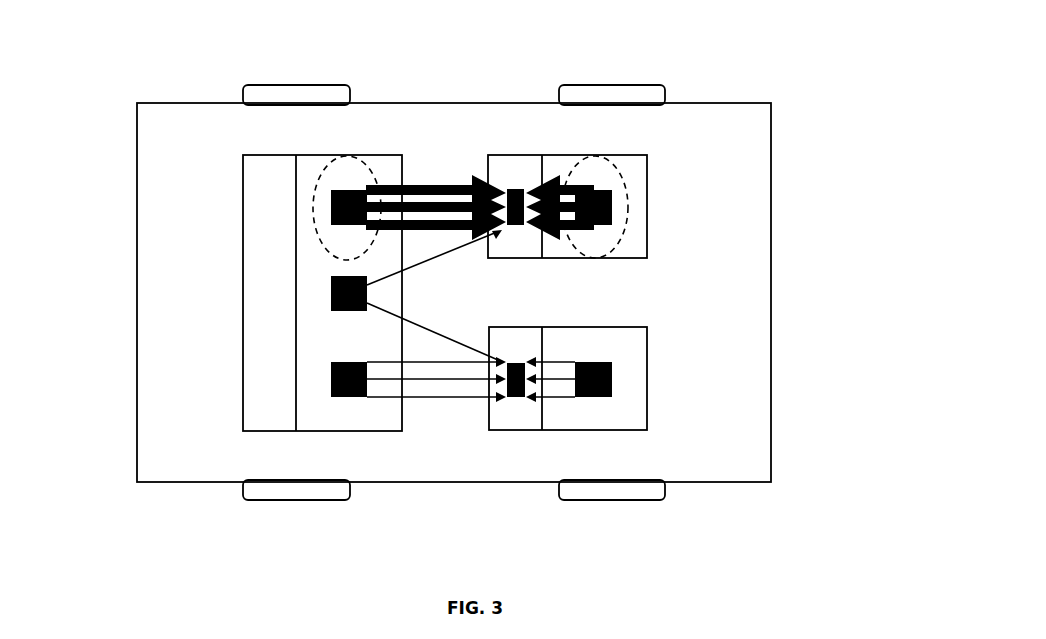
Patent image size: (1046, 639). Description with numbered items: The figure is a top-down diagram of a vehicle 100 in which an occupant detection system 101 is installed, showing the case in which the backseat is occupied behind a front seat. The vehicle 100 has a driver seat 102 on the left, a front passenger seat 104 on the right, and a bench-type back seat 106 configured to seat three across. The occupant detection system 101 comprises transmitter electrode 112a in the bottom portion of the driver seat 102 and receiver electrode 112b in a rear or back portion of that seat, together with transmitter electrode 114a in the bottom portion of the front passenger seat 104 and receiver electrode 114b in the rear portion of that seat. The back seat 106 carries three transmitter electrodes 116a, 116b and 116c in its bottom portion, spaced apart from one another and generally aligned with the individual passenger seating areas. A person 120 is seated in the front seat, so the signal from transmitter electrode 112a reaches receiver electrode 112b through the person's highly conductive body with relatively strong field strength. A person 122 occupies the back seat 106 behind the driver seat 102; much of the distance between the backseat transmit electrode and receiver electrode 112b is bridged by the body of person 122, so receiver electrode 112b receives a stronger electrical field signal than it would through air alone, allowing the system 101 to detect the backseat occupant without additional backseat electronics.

The vehicle 100 is at (771, 187).
The occupant detection system 101 is at (168, 66).
The driver seat 102 is at (523, 155).
The front passenger seat 104 is at (522, 432).
The back seat 106 is at (370, 157).
The transmitter electrode 112a is at (612, 205).
The receiver electrode 112b is at (514, 189).
The transmitter electrode 114a is at (612, 397).
The receiver electrode 114b is at (512, 398).
The transmitter electrode 116a is at (352, 190).
The transmitter electrode 116b is at (331, 293).
The transmitter electrode 116c is at (348, 397).
The person 120 is at (628, 213).
The person 122 is at (323, 167).